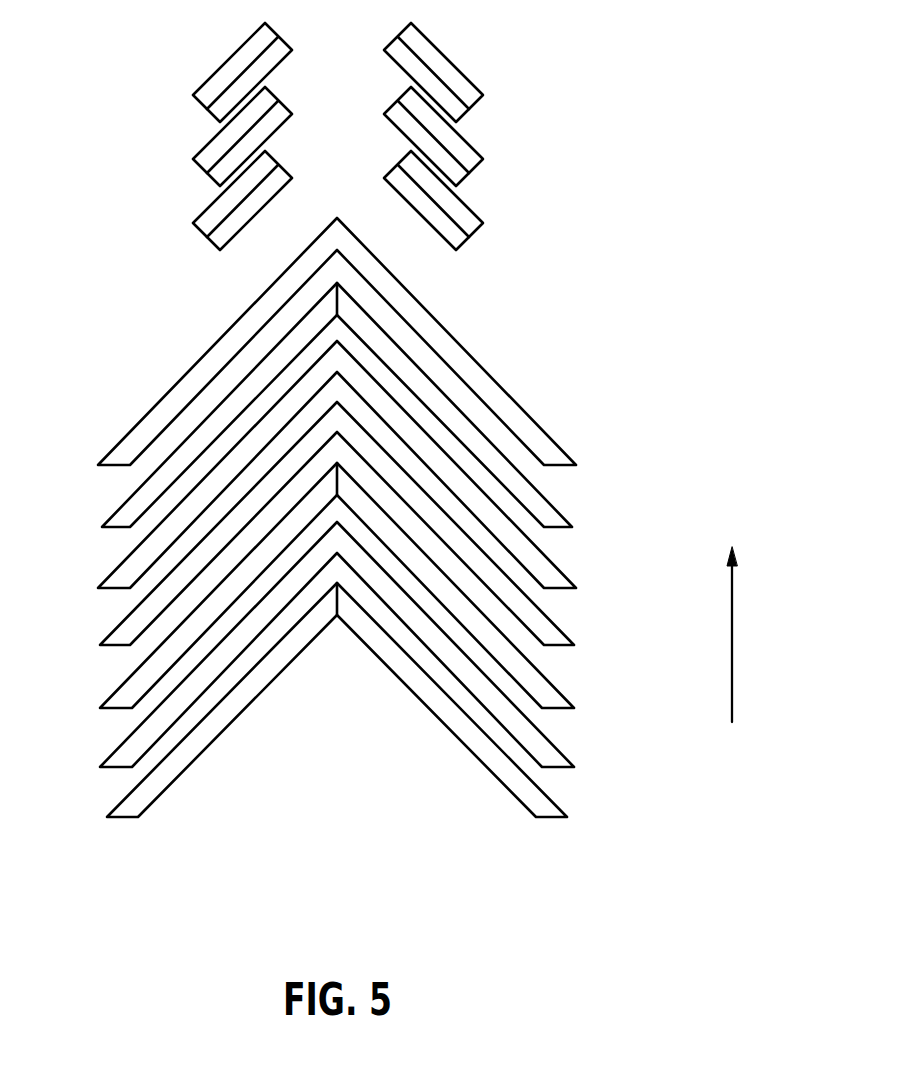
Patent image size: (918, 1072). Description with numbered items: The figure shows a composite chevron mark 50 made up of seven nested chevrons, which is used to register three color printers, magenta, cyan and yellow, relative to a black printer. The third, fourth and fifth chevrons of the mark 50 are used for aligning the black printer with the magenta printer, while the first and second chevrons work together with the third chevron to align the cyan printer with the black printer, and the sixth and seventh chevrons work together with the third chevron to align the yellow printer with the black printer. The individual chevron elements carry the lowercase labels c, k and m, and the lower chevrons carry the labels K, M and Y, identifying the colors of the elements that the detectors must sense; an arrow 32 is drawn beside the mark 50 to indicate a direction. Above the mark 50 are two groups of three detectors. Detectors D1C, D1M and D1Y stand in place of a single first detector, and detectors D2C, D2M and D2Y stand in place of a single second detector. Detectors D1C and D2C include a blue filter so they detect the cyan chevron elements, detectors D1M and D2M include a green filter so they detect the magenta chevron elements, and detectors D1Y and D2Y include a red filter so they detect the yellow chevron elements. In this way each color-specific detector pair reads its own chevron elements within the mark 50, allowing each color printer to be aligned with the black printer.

The detector D1C is at (193, 95).
The detector D1M is at (193, 159).
The detector D1Y is at (193, 223).
The detector D2C is at (483, 95).
The detector D2M is at (483, 159).
The detector D2Y is at (483, 223).
The cyan ink stripe c is at (288, 285).
The black ink stripe k is at (296, 345).
The magenta ink stripe m is at (247, 505).
The black chevron stripe K is at (158, 662).
The magenta chevron stripe M is at (525, 672).
The yellow chevron stripe Y is at (150, 732).
The composite chevron mark 50 is at (640, 386).
The print medium advance direction 32 is at (732, 642).